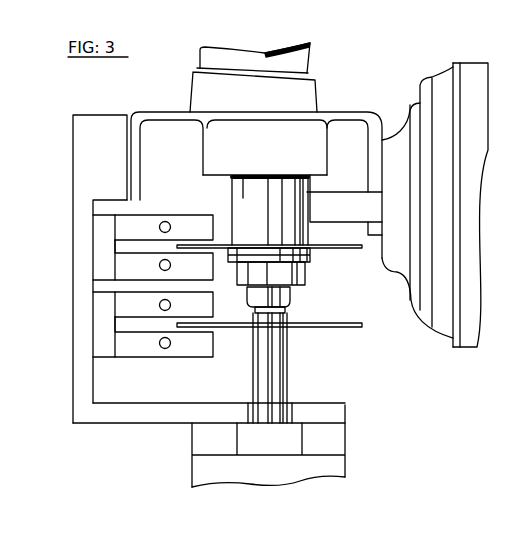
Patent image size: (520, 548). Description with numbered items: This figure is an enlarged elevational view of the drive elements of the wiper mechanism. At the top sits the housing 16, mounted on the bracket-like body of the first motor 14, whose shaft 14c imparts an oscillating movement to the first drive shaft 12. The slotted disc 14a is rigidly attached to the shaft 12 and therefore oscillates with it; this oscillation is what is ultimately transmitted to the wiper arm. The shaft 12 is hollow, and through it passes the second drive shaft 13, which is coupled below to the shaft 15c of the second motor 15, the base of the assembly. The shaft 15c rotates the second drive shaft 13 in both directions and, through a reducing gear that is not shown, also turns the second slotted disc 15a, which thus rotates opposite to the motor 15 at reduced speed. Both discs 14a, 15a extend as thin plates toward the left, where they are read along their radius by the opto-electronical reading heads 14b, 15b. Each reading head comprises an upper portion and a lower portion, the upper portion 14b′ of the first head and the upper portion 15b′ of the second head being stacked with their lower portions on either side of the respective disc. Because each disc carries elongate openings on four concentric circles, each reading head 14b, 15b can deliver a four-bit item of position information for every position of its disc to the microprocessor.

The first drive shaft 12 is at (258, 183).
The second drive shaft 13 is at (290, 296).
The first motor 14 is at (470, 80).
The slotted disc 14a is at (347, 249).
The opto-electronical reading head 14b is at (105, 223).
The upper portion of reading head 14b′ is at (200, 223).
The shaft of first motor 14c is at (343, 200).
The second motor 15 is at (337, 465).
The slotted disc 15a is at (343, 328).
The opto-electronical reading head 15b is at (103, 348).
The upper portion of reading head 15b′ is at (135, 307).
The shaft of second motor 15c is at (278, 377).
The housing 16 is at (305, 62).